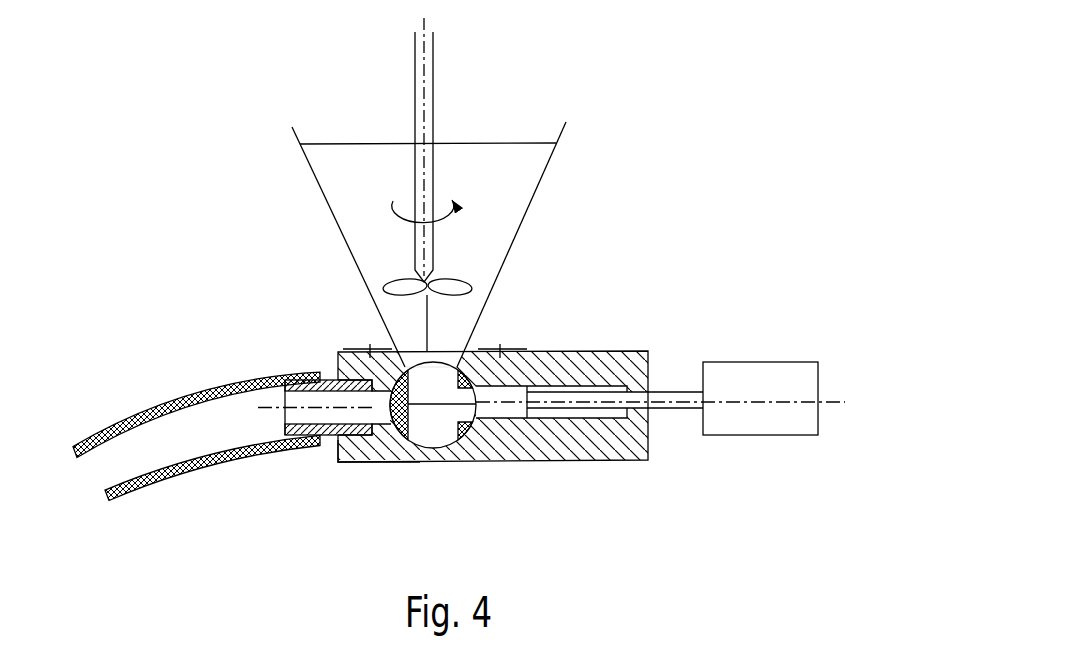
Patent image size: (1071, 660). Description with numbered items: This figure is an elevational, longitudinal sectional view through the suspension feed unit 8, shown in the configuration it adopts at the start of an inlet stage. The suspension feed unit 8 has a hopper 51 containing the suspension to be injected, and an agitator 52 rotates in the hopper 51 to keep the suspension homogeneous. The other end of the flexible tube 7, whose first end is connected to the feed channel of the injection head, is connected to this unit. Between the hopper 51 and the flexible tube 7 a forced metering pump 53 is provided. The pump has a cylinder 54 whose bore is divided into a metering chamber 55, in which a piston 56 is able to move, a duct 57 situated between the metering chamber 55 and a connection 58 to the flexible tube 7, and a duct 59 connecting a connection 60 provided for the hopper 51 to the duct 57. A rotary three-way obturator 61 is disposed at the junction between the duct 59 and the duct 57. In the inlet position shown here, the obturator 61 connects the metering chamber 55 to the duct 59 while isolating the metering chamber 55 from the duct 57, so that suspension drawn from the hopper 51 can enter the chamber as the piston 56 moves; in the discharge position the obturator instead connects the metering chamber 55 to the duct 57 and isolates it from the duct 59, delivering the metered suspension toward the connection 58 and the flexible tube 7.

The flexible tube 7 is at (117, 427).
The suspension feed unit 8 is at (659, 122).
The hopper 51 is at (533, 196).
The agitator 52 is at (418, 65).
The forced metering pump 53 is at (661, 343).
The cylinder 54 is at (590, 372).
The metering chamber 55 is at (578, 420).
The piston 56 is at (503, 408).
The duct 57 is at (380, 375).
The connection 58 is at (297, 359).
The duct 59 is at (441, 356).
The connection 60 is at (530, 346).
The rotary three-way obturator 61 is at (356, 466).